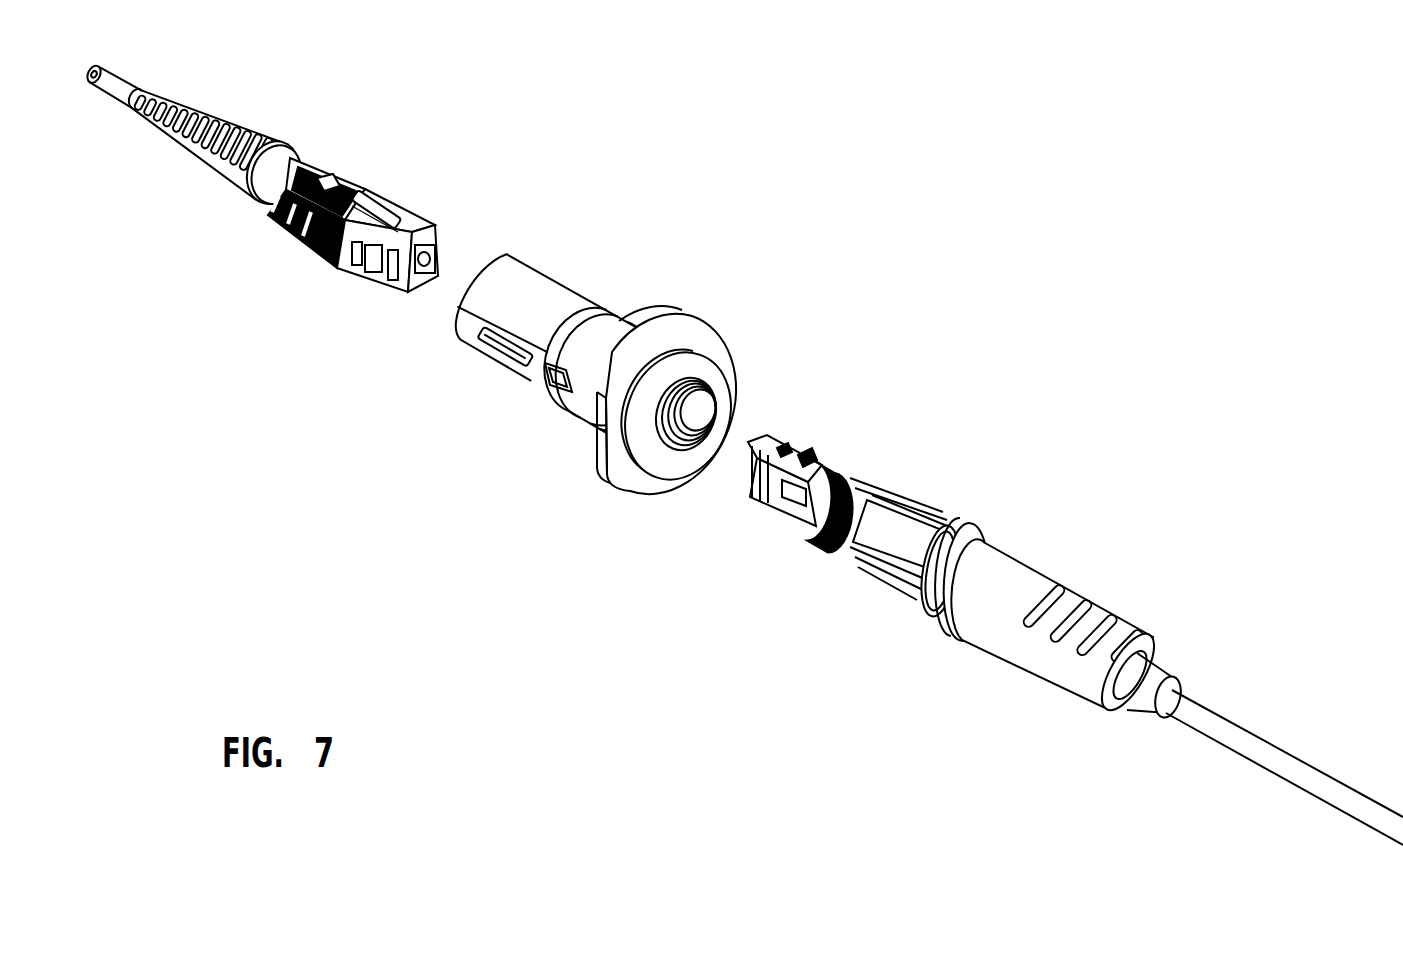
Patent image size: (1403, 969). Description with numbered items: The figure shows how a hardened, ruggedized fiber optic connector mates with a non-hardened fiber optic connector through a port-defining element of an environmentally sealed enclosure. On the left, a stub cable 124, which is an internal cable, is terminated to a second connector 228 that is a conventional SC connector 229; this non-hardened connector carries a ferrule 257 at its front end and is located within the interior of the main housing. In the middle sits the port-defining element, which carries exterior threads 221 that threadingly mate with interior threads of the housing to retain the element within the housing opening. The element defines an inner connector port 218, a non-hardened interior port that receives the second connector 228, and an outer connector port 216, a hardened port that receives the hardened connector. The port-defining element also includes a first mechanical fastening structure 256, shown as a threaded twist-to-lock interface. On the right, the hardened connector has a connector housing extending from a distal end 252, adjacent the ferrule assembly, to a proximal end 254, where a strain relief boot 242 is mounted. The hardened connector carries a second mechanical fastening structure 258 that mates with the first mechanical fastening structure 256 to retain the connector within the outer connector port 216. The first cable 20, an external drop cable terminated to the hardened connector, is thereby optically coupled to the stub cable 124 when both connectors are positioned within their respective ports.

The stub cable 124 is at (131, 84).
The second connector 228 is at (355, 191).
The SC connector 229 is at (356, 164).
The ferrule 257 is at (418, 296).
The inner connector port 218 is at (489, 256).
The exterior threads 221 is at (584, 418).
The outer connector port 216 is at (674, 441).
The first mechanical fastening structure 256 is at (700, 409).
The proximal end 254 is at (856, 508).
The distal end 252 is at (745, 455).
The second mechanical fastening structure 258 is at (822, 527).
The strain relief boot 242 is at (1060, 585).
The first cable 20 is at (1313, 775).